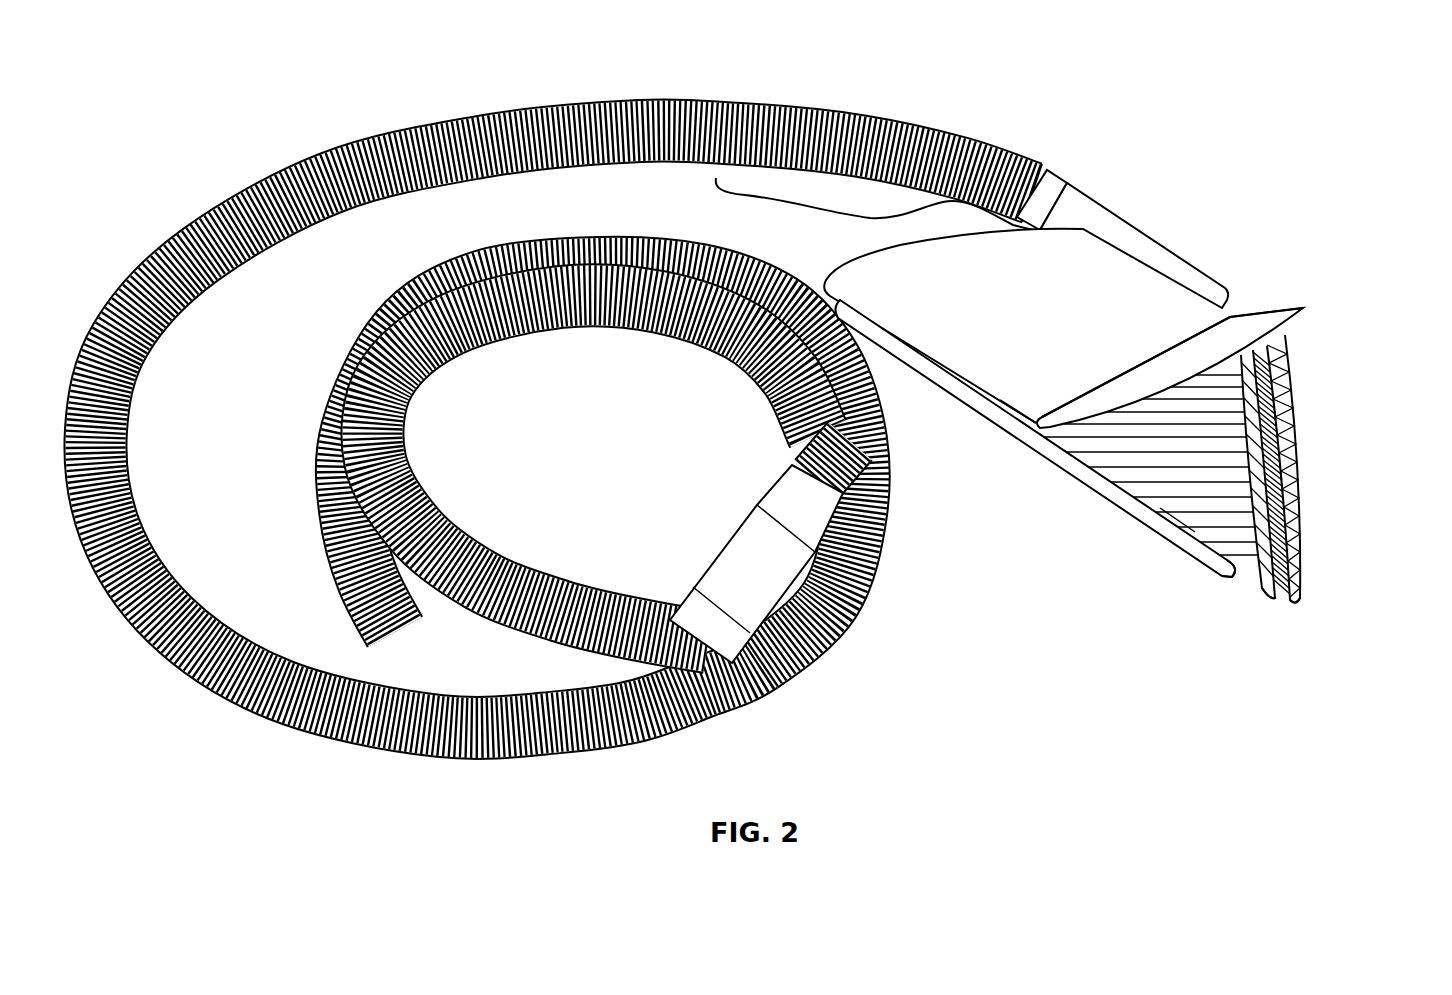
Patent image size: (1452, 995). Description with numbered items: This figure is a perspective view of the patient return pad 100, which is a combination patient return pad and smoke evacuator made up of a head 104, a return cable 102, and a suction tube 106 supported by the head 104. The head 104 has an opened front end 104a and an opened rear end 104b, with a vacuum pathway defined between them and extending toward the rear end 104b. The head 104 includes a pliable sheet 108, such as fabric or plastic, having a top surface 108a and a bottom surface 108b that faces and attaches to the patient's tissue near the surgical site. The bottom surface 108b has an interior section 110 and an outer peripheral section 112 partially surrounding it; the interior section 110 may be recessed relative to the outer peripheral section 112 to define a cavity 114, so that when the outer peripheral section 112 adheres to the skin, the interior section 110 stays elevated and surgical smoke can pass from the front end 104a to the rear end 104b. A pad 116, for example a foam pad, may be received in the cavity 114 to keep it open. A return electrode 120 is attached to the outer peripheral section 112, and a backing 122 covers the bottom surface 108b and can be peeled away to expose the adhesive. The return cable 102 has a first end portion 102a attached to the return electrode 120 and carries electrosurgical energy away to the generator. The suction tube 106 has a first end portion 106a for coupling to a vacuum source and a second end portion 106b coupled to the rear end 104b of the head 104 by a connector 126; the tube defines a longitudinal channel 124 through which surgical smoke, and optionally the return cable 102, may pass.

The patient return pad 100 is at (150, 96).
The return cable 102 is at (835, 212).
The first end portion 102a is at (1038, 178).
The head 104 is at (1133, 420).
The front end 104a is at (1228, 576).
The rear end 104b is at (1240, 303).
The suction tube 106 is at (787, 577).
The first end portion 106a is at (902, 550).
The second end portion 106b is at (1062, 176).
The pliable sheet 108 is at (1317, 469).
The top surface 108a is at (1050, 430).
The bottom surface 108b is at (1292, 584).
The interior section 110 is at (1140, 500).
The outer peripheral section 112 is at (1284, 392).
The cavity 114 is at (1178, 519).
The pad 116 is at (1237, 443).
The return electrode 120 is at (1278, 490).
The backing 122 is at (1294, 315).
The longitudinal channel 124 is at (862, 433).
The connector 126 is at (1173, 250).